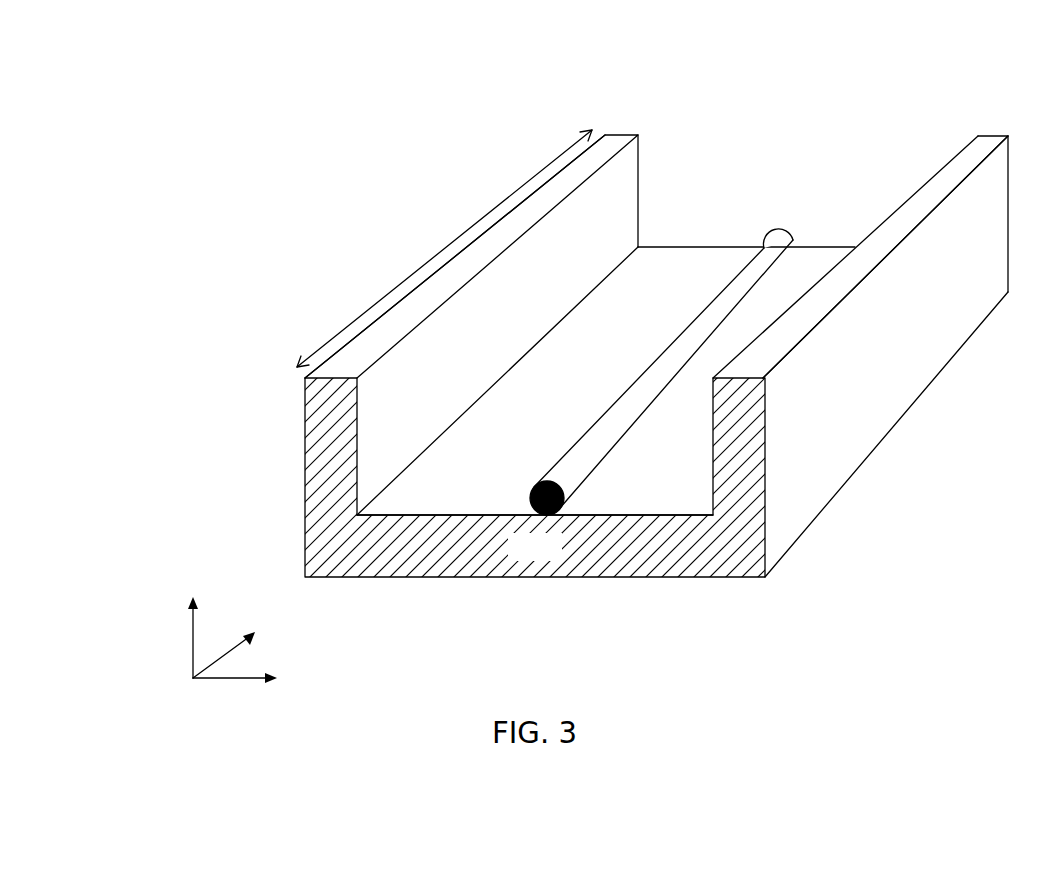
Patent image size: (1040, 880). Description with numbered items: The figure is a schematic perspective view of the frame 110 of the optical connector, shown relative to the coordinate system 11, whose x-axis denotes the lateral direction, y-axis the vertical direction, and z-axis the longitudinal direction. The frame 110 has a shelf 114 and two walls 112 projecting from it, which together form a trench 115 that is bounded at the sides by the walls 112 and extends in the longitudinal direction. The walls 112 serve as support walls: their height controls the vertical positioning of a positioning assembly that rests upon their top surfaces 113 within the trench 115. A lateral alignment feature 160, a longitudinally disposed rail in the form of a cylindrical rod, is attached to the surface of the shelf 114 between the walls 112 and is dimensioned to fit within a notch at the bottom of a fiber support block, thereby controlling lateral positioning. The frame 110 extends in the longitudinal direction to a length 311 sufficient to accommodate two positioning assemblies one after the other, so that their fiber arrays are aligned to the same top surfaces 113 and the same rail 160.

The frame 110 is at (555, 303).
The walls 112 is at (305, 453).
The top surfaces 113 is at (380, 333).
The shelf 114 is at (557, 560).
The trench 115 is at (709, 146).
The lateral alignment feature 160 is at (763, 257).
The length 311 is at (460, 237).
The coordinate system 11 is at (212, 708).